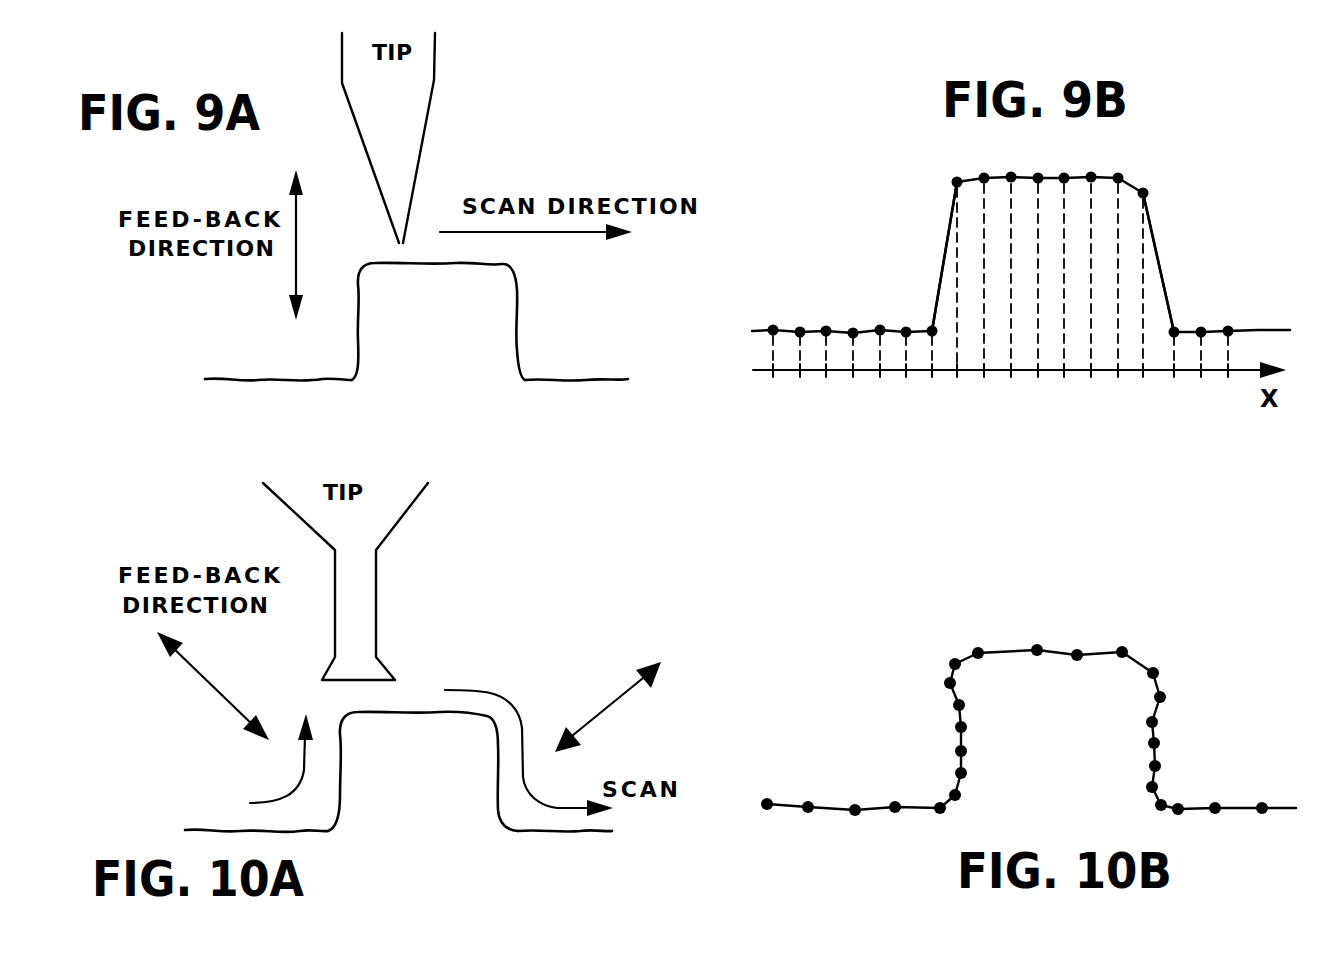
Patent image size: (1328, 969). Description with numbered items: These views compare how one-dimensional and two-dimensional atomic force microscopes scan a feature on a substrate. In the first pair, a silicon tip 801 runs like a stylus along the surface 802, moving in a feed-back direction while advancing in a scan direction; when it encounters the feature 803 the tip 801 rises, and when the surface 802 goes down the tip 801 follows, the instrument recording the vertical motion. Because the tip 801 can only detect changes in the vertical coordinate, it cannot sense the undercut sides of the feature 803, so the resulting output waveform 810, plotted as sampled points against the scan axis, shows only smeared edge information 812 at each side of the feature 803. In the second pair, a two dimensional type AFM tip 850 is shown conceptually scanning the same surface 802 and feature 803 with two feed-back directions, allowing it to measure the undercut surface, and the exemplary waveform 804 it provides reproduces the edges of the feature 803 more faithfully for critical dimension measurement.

In FIG. 9A, the silicon tip 801 is at (404, 233).
In FIG. 9A, the surface 802 is at (538, 380).
In FIG. 10A, the surface 802 is at (548, 832).
In FIG. 9A, the feature 803 is at (520, 276).
In FIG. 10A, the feature 803 is at (490, 718).
In FIG. 9B, the output waveform 810 is at (1217, 323).
In FIG. 9B, the smeared edge information 812 is at (937, 275).
In FIG. 10A, the two dimensional type AFM tip 850 is at (390, 680).
In FIG. 10B, the waveform 804 is at (1145, 660).